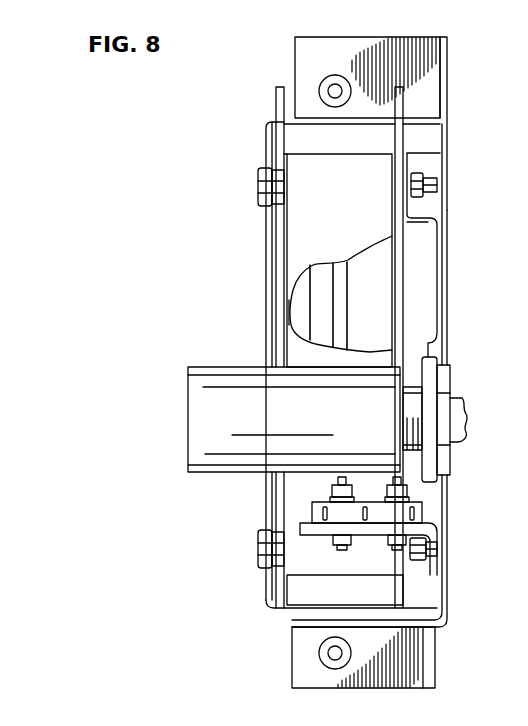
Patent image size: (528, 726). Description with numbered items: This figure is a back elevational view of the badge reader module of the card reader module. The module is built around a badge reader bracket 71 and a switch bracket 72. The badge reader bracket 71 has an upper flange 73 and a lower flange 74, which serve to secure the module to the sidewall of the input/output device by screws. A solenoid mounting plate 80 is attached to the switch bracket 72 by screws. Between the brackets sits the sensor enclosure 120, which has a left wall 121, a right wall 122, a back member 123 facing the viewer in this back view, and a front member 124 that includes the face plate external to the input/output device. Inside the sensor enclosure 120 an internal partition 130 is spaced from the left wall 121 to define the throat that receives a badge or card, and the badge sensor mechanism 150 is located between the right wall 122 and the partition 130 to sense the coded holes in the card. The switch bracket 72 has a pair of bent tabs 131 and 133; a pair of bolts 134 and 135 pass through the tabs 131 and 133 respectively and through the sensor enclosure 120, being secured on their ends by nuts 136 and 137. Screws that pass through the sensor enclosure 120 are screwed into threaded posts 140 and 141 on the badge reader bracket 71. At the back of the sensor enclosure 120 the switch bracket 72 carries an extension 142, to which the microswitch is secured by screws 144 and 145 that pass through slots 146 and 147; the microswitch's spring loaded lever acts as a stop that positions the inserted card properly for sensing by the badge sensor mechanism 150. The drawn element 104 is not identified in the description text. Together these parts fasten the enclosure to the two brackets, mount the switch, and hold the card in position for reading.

The badge reader bracket 71 is at (447, 66).
The switch bracket 72 is at (447, 284).
The upper flange 73 is at (295, 60).
The lower flange 74 is at (300, 667).
The solenoid mounting plate 80 is at (437, 345).
The cross member 104 is at (188, 370).
The sensor enclosure 120 is at (306, 154).
The left wall 121 is at (403, 96).
The right wall 122 is at (276, 100).
The back member 123 is at (352, 211).
The front member 124 is at (290, 606).
The internal partition 130 is at (340, 318).
The bent tab 131 is at (407, 153).
The bent tab 133 is at (403, 580).
The bolt 134 is at (423, 180).
The bolt 135 is at (432, 547).
The nut 136 is at (258, 186).
The nut 137 is at (258, 561).
The threaded post 140 is at (426, 190).
The threaded post 141 is at (426, 556).
The extension 142 is at (300, 528).
The screw 144 is at (342, 545).
The screw 145 is at (400, 548).
The slot 146 is at (312, 505).
The slot 147 is at (422, 515).
The badge sensor mechanism 150 is at (310, 290).